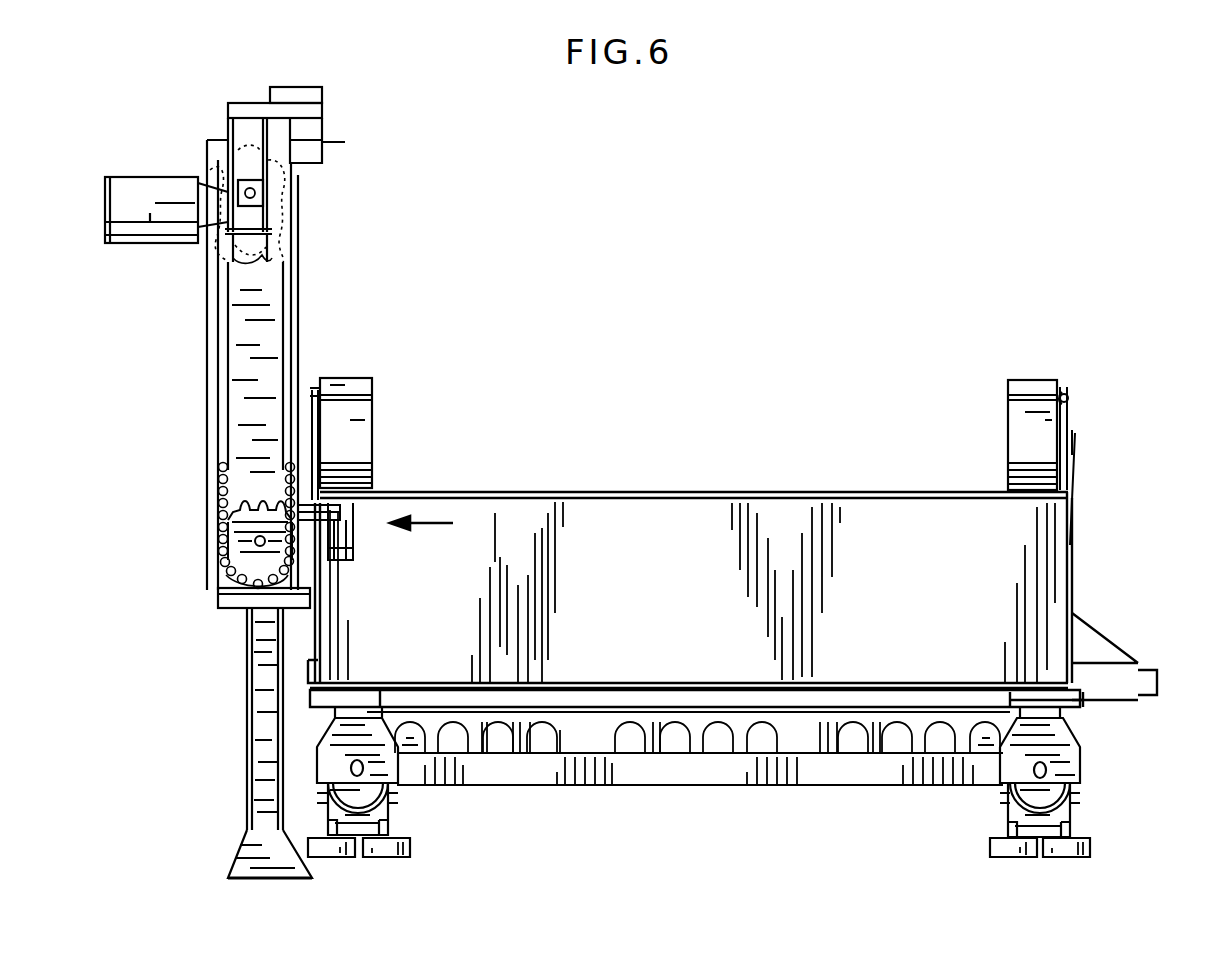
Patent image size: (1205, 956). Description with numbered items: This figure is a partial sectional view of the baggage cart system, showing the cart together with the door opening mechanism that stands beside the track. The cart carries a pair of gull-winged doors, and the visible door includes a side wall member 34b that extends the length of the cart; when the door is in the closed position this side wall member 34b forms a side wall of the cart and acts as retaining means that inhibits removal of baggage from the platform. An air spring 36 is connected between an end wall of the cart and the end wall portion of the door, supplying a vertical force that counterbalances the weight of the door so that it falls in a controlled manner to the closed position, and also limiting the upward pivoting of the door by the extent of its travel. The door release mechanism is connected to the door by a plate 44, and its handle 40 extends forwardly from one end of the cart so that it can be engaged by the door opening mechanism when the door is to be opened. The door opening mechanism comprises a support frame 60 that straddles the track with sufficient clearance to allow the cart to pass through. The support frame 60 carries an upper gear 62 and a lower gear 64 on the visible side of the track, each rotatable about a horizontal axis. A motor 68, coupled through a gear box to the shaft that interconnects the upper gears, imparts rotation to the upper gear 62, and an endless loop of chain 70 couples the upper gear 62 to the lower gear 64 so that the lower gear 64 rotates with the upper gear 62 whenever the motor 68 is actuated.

The side wall member 34b is at (687, 510).
The air spring 36 is at (1067, 418).
The handle 40 is at (323, 507).
The plate 44 is at (347, 543).
The support frame 60 is at (260, 680).
The upper gear 62 is at (282, 195).
The lower gear 64 is at (248, 547).
The motor 68 is at (155, 240).
The chain 70 is at (283, 343).